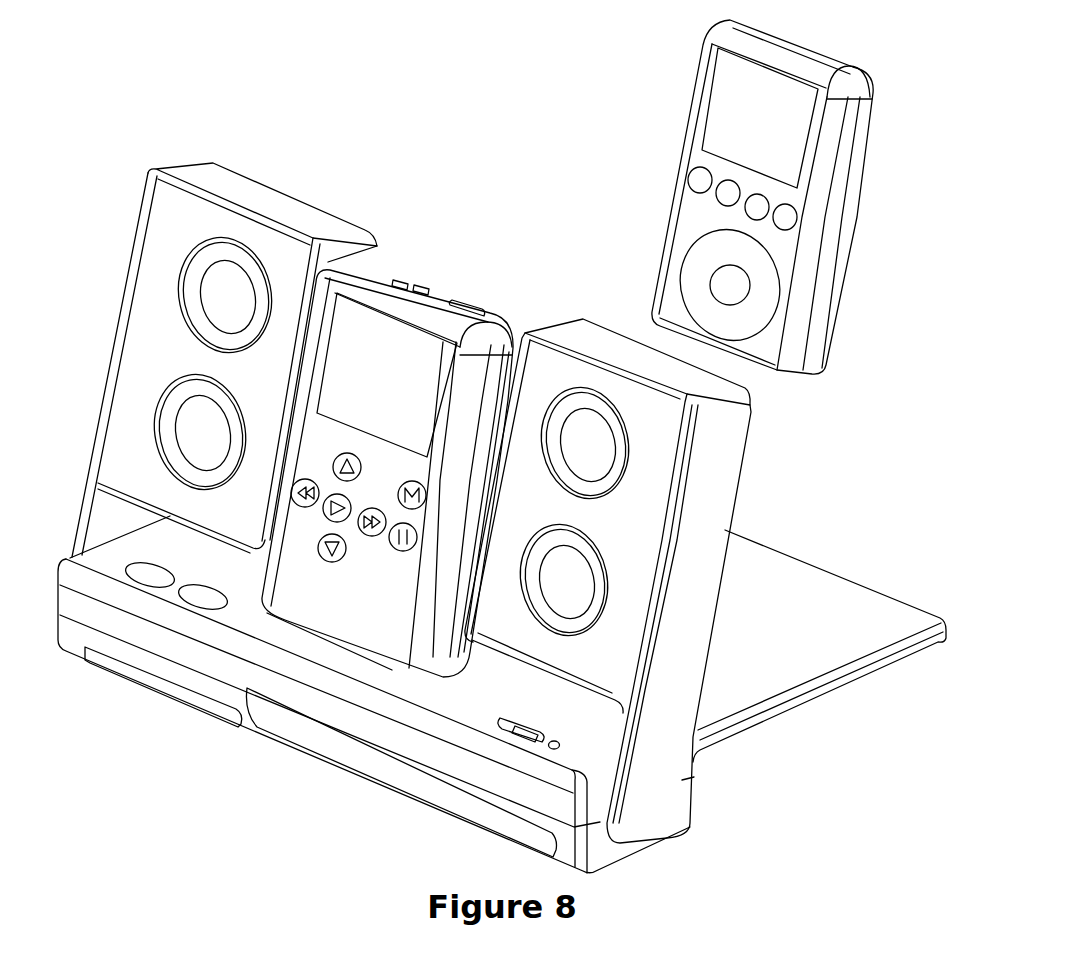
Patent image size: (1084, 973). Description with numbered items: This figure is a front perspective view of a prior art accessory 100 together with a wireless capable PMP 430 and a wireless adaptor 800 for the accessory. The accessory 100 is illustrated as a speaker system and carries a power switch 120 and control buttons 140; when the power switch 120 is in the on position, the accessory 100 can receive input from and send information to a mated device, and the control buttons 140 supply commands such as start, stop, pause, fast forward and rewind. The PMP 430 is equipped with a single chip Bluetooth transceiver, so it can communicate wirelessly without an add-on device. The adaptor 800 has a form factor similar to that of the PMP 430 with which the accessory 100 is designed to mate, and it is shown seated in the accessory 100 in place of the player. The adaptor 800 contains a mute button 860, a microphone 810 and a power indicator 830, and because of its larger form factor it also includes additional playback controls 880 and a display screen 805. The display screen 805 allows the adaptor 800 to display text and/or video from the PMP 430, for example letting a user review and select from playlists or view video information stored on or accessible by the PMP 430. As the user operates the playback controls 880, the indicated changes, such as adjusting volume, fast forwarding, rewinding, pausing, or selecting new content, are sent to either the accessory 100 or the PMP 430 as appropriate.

The accessory 100 is at (666, 806).
The power switch 120 is at (520, 720).
The control buttons 140 is at (172, 569).
The PMP 430 is at (678, 161).
The adaptor 800 is at (423, 648).
The display screen 805 is at (335, 370).
The microphone 810 is at (423, 286).
The power indicator 830 is at (398, 280).
The mute button 860 is at (467, 301).
The playback controls 880 is at (365, 566).